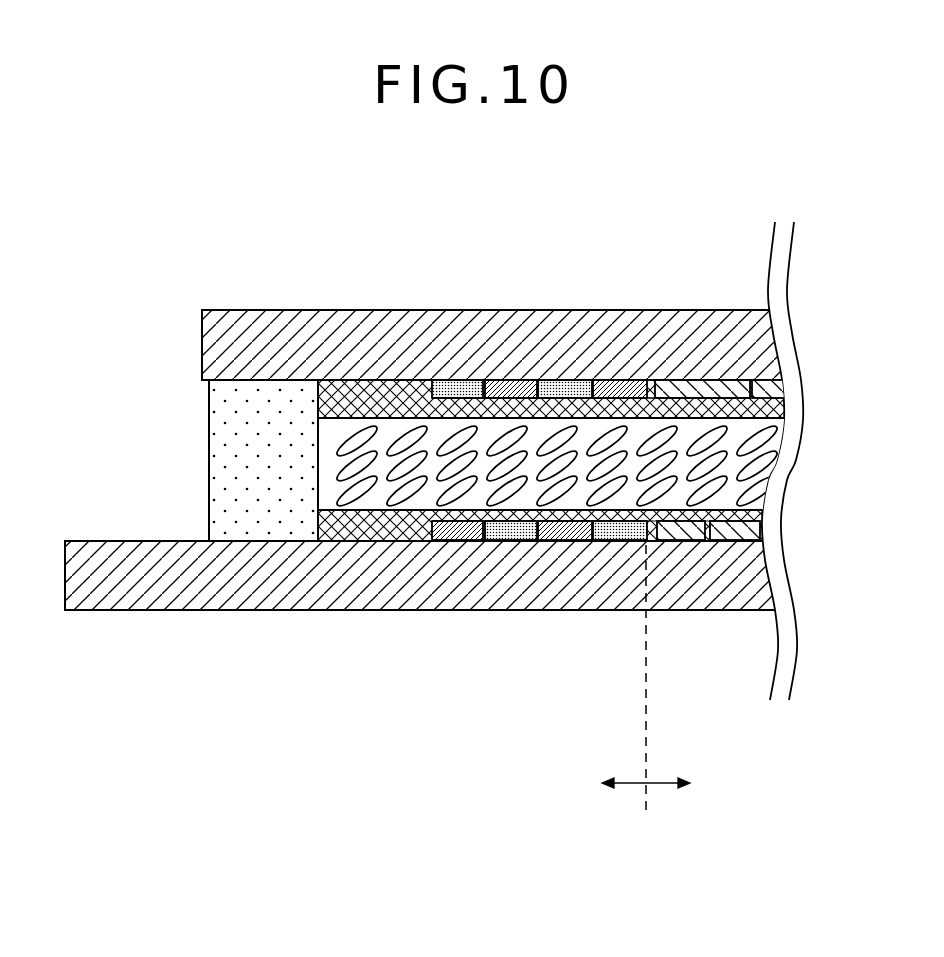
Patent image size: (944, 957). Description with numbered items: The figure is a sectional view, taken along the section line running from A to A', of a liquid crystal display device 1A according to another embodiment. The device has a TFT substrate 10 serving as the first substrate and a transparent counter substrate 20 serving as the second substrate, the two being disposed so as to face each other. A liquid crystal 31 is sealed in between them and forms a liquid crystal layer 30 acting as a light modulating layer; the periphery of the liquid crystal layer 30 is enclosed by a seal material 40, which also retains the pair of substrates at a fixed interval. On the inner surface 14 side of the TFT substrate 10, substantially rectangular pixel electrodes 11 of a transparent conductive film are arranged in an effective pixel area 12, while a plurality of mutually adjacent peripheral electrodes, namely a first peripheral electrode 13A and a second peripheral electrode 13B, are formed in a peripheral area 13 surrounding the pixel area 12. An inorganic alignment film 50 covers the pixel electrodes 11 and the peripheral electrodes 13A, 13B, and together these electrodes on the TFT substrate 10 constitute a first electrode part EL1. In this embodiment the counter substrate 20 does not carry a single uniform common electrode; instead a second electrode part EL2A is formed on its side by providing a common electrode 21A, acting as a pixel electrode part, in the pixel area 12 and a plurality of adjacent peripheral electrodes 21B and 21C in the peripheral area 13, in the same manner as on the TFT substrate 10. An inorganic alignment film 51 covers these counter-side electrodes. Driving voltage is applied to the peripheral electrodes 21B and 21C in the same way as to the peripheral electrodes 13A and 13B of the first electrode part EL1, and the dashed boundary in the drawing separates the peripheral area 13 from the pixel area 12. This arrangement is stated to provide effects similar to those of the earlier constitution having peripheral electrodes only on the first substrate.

The liquid crystal display device 1A is at (522, 178).
The TFT substrate 10 is at (177, 593).
The pixel electrodes 11 is at (680, 533).
The pixel area 12 is at (687, 677).
The peripheral area 13 is at (606, 785).
The first peripheral electrode 13A is at (548, 538).
The second peripheral electrode 13B is at (510, 538).
The substrate surface 14 is at (130, 550).
The counter substrate 20 is at (213, 350).
The common electrode (pixel electrode part) 21A is at (723, 387).
The peripheral electrode 21B is at (612, 385).
The peripheral electrode 21C is at (557, 385).
The liquid crystal layer 30 is at (745, 430).
The liquid crystal 31 is at (620, 437).
The seal material 40 is at (218, 412).
The inorganic alignment film 50 is at (351, 527).
The inorganic alignment film 51 is at (347, 397).
The first electrode part EL1 is at (768, 532).
The second electrode part EL2A is at (787, 390).
The section line start A is at (45, 630).
The section line end A' is at (824, 620).